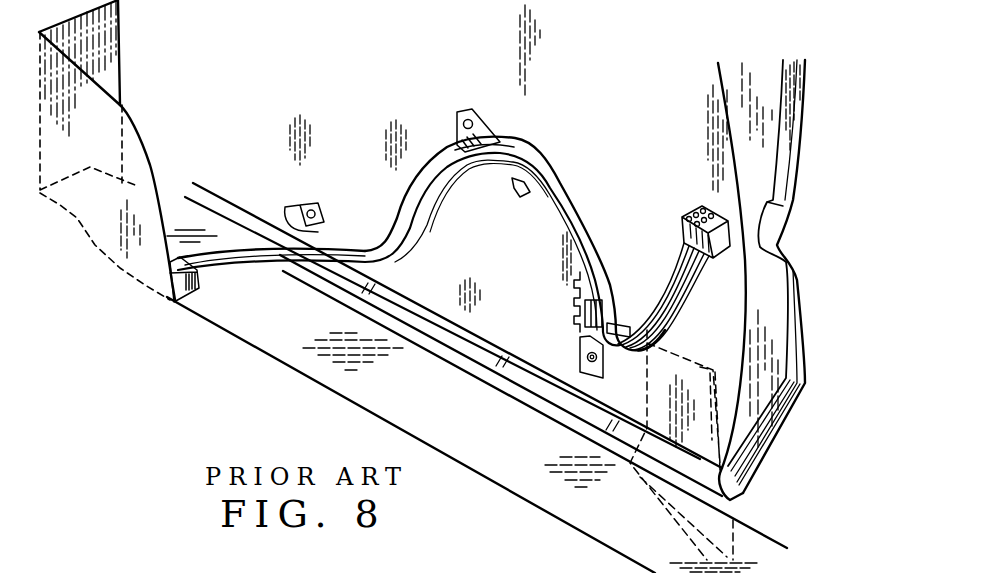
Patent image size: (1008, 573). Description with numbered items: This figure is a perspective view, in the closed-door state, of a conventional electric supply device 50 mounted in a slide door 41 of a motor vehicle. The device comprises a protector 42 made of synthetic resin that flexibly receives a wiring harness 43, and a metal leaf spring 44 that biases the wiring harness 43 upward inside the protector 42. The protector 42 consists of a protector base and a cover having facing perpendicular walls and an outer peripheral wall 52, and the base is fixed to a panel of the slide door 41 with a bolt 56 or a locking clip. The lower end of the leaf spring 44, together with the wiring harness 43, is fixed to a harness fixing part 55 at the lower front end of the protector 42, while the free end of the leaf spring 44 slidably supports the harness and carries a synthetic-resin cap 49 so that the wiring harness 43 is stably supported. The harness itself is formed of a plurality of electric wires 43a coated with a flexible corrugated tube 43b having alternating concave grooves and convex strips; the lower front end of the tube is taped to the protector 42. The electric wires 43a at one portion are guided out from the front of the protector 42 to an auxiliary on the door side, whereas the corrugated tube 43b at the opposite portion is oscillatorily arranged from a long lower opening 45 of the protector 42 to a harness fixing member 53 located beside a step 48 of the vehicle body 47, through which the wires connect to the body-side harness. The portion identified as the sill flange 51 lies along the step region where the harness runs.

The slide door 41 is at (804, 390).
The protector 42 is at (556, 166).
The wiring harness 43 is at (430, 208).
The electric wires 43a is at (670, 288).
The corrugated tube 43b is at (575, 210).
The leaf spring 44 is at (562, 220).
The long lower opening 45 is at (468, 330).
The vehicle body 47 is at (120, 61).
The step 48 is at (293, 340).
The cap 49 is at (514, 183).
The electric supply device 50 is at (531, 130).
The sill flange 51 is at (535, 345).
The outer peripheral wall 52 is at (509, 148).
The harness fixing member 53 is at (186, 308).
The harness fixing part 55 is at (586, 305).
The bolt 56 is at (456, 126).